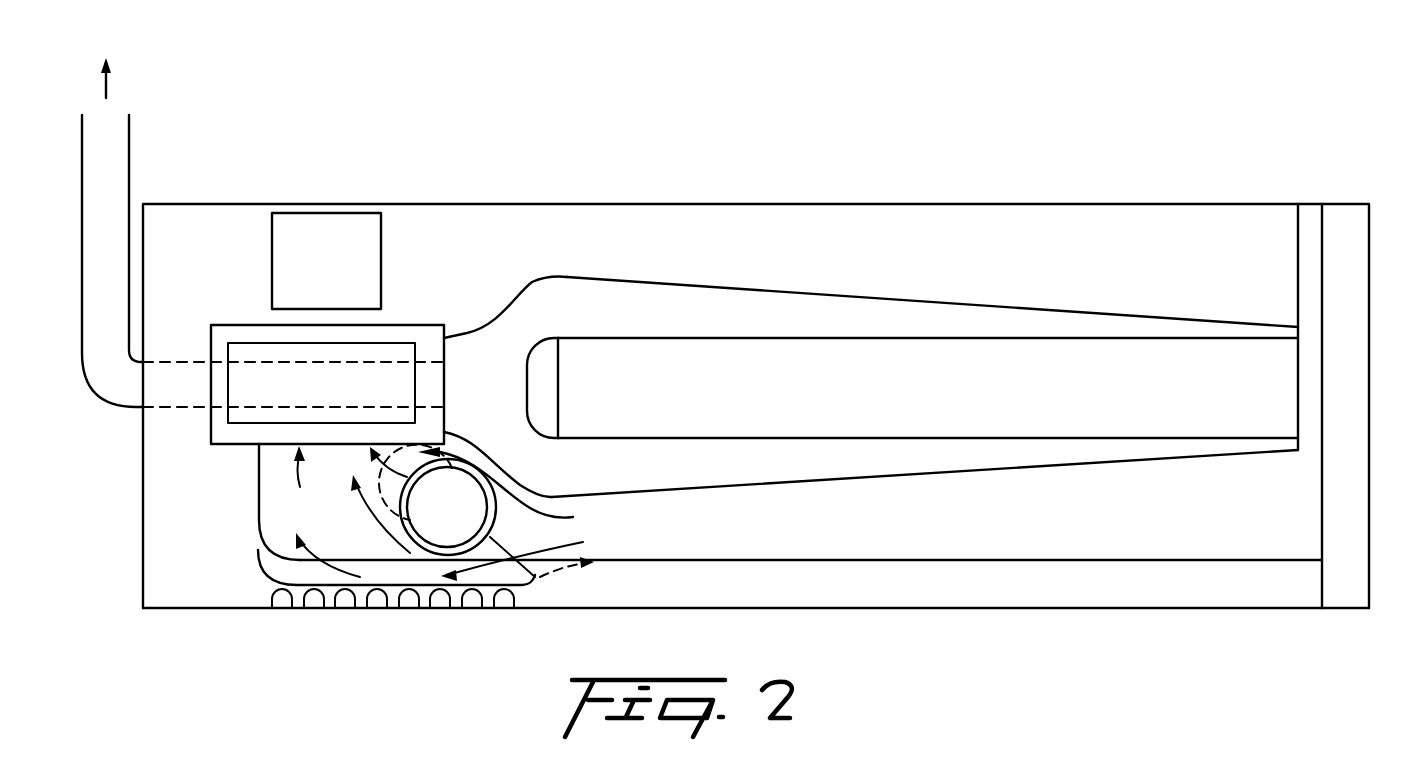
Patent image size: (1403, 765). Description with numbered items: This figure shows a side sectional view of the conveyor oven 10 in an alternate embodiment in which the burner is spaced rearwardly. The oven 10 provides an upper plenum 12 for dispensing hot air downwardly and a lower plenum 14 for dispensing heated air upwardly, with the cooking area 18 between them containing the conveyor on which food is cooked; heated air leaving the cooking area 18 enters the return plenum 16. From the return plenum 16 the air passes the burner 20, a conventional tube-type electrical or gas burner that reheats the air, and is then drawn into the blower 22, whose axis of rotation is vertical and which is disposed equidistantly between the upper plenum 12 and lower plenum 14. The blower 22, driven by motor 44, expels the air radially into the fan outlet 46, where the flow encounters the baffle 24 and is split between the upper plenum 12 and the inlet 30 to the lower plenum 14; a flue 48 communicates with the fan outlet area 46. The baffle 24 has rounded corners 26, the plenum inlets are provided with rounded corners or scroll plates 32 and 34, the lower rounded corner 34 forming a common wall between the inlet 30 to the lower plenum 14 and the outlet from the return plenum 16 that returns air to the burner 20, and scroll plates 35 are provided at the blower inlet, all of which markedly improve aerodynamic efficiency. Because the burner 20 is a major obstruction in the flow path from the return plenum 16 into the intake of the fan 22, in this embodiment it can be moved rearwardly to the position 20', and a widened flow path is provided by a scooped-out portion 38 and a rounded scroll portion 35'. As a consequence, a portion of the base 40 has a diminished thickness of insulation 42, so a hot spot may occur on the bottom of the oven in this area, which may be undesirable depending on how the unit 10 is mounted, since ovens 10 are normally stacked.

The conveyor oven 10 is at (870, 196).
The upper plenum 12 is at (922, 318).
The lower plenum 14 is at (892, 455).
The return plenum 16 is at (1133, 524).
The cooking area 18 is at (553, 300).
The burner 20 is at (456, 500).
The rearward burner position 20' is at (519, 574).
The blower 22 is at (398, 353).
The baffle 24 is at (530, 383).
The rounded corners 26 is at (535, 346).
The inlet to lower plenum 30 is at (555, 475).
The scroll plate 32 is at (532, 283).
The lower rounded corner 34 is at (547, 493).
The scroll plates at blower inlet 35 is at (250, 502).
The rounded scroll portion 35' is at (366, 571).
The scooped-out portion 38 is at (503, 577).
The base 40 is at (955, 598).
The insulation 42 is at (458, 602).
The motor 44 is at (337, 233).
The fan outlet 46 is at (496, 394).
The flue 48 is at (115, 147).